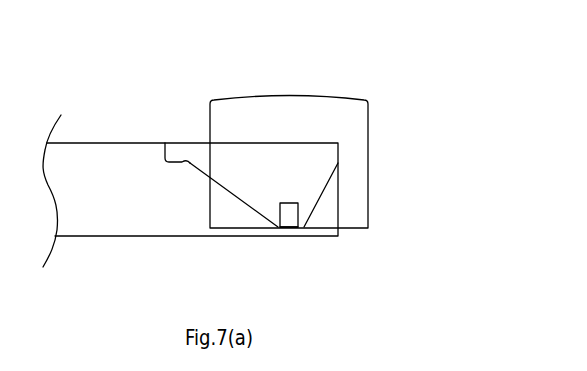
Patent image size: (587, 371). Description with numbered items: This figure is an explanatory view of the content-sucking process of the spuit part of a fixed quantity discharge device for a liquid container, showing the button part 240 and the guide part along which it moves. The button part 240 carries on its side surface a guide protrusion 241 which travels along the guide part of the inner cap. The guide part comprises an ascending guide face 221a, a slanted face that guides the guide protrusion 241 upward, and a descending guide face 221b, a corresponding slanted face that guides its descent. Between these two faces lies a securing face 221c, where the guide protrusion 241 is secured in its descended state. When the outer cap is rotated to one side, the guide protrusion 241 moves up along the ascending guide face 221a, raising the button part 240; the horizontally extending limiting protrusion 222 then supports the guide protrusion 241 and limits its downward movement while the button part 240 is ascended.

The limiting protrusion 222 is at (177, 162).
The button part 240 is at (350, 118).
The ascending guide face 221a is at (231, 193).
The descending guide face 221b is at (327, 187).
The securing face 221c is at (290, 218).
The guide protrusion 241 is at (291, 217).